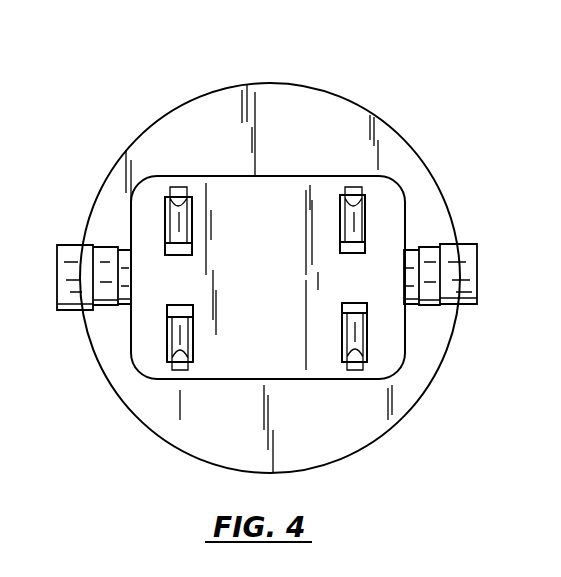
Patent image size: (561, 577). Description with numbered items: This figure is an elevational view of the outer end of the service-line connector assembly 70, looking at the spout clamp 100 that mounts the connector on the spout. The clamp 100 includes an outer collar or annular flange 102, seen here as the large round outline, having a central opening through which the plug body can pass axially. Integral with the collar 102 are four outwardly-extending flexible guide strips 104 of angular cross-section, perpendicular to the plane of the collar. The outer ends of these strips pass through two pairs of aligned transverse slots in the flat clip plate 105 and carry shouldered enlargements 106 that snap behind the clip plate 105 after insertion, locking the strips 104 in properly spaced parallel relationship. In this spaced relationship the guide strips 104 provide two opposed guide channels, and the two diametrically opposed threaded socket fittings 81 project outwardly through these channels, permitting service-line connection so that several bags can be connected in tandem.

The spout clamp 100 is at (358, 106).
The service-line connector assembly 70 is at (436, 174).
The outer collar 102 is at (347, 431).
The clip plate 105 is at (283, 302).
The guide strips 104 is at (188, 244).
The shouldered enlargements 106 is at (178, 189).
The threaded socket fittings 81 is at (65, 254).